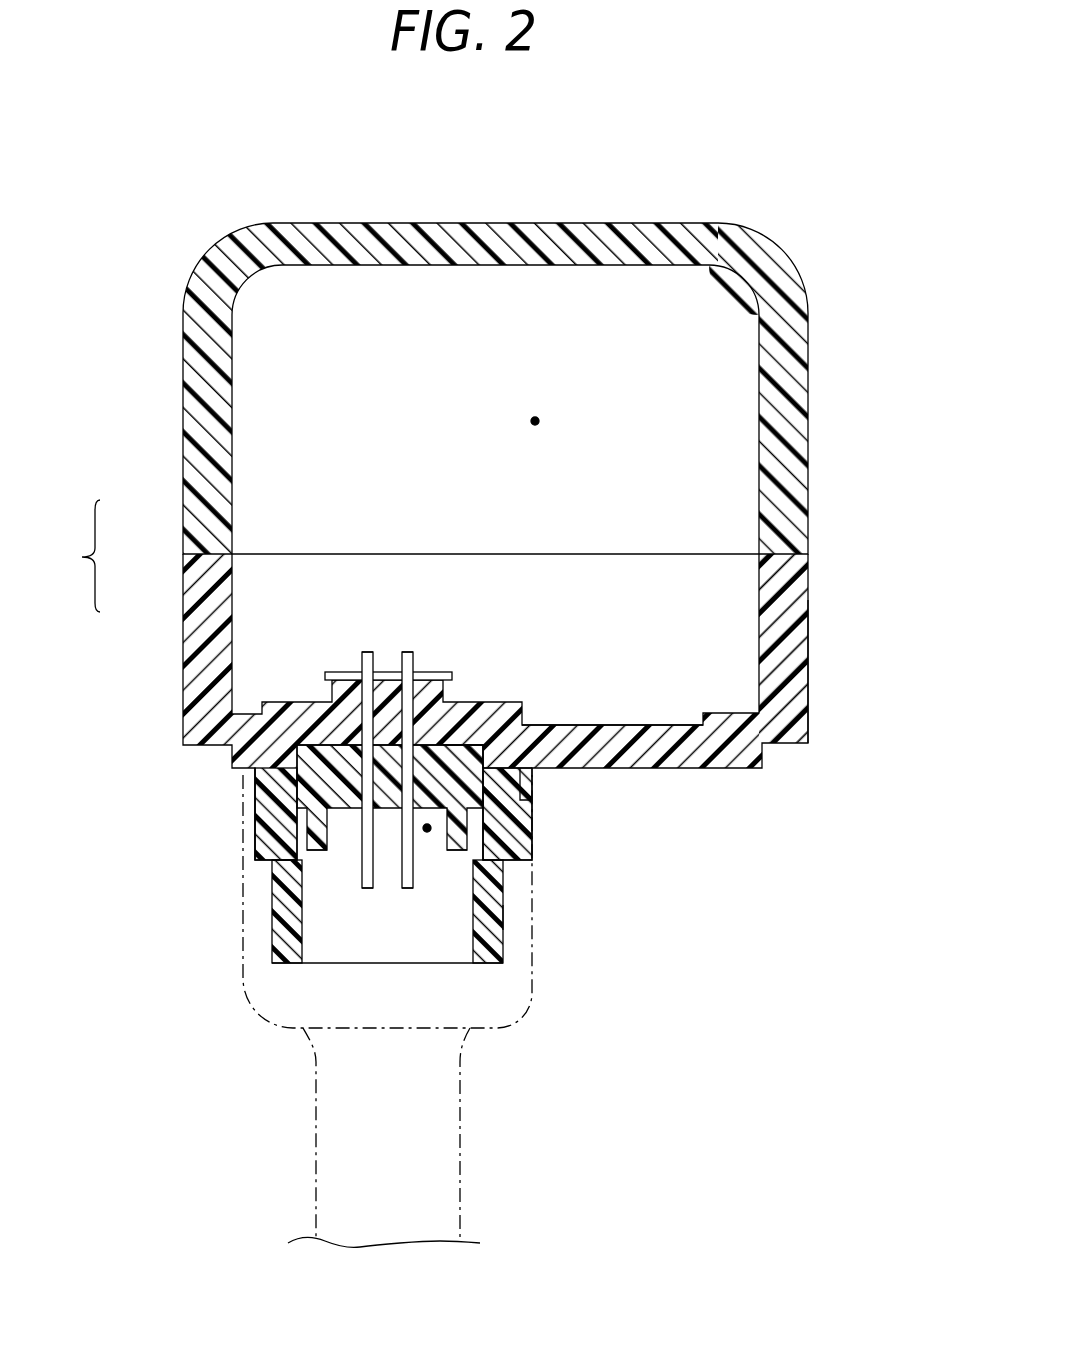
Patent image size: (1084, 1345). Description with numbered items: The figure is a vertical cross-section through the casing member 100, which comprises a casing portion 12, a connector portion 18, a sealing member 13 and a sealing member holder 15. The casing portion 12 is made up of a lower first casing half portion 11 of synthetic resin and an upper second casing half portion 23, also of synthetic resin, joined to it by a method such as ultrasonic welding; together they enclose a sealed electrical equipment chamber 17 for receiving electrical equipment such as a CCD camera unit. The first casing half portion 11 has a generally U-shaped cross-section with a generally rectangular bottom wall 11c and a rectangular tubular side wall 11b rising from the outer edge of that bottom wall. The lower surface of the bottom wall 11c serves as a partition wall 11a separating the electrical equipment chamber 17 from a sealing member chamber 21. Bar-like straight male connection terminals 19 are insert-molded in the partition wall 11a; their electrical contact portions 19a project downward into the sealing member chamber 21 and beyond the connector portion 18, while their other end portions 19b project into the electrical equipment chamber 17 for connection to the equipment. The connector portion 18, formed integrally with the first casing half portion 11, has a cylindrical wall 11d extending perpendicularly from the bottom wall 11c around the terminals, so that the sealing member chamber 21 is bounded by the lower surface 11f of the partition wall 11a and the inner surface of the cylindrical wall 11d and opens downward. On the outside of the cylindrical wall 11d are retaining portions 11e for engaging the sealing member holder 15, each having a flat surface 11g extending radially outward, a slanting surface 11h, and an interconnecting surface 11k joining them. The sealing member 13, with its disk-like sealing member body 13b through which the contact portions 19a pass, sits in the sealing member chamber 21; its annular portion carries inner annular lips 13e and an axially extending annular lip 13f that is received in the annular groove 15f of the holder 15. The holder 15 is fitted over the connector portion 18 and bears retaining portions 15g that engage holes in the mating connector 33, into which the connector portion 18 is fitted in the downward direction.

The casing member 100 is at (897, 593).
The first casing half portion 11 is at (183, 592).
The partition wall 11a is at (338, 672).
The side wall 11b is at (808, 660).
The bottom wall 11c is at (689, 725).
The cylindrical wall 11d is at (507, 790).
The retaining portion 11e is at (485, 845).
The lower surface of the partition wall 11f is at (480, 815).
The flat surface 11g is at (262, 778).
The slanting surface 11h is at (285, 845).
The interconnecting surface 11k is at (262, 818).
The casing portion 12 is at (72, 556).
The sealing member 13 is at (323, 745).
The sealing member body 13b is at (460, 745).
The annular lip 13e is at (465, 870).
The annular lip 13f is at (358, 862).
The sealing member holder 15 is at (505, 945).
The annular groove 15f is at (290, 770).
The retaining portion 15g is at (500, 905).
The electrical equipment chamber 17 is at (535, 421).
The connector portion 18 is at (455, 760).
The connection terminal 19 is at (404, 872).
The electrical contact portion 19a is at (367, 888).
The other end portion 19b is at (407, 652).
The sealing member chamber 21 is at (427, 828).
The second casing half portion 23 is at (183, 545).
The mating connector 33 is at (255, 1008).